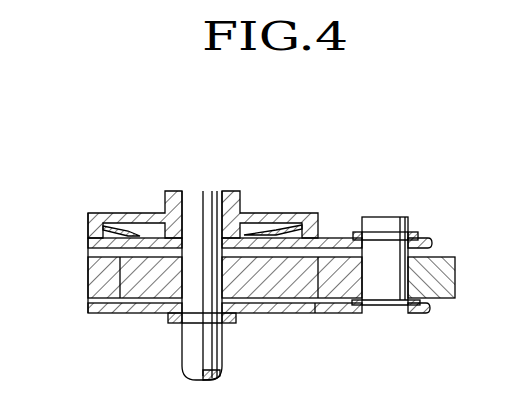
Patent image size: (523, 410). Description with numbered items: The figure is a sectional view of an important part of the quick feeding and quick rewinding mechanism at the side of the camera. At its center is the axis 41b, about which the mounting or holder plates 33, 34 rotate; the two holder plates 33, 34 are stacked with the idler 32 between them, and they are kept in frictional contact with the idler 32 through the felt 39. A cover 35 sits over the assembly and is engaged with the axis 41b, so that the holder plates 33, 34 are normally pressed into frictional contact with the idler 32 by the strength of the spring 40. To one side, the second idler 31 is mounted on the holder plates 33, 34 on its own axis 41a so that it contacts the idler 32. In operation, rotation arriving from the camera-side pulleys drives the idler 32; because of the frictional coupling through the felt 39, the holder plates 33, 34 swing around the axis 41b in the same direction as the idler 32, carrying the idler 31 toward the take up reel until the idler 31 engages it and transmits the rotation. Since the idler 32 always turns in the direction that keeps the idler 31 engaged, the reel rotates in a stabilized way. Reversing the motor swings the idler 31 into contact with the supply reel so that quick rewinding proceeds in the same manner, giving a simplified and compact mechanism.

The idler 31 is at (440, 258).
The idler 32 is at (95, 278).
The holder plate 33 is at (332, 243).
The holder plate 34 is at (317, 308).
The cover 35 is at (295, 222).
The felt 39 is at (121, 256).
The spring 40 is at (245, 225).
The axis 41a is at (390, 250).
The axis 41b is at (188, 198).